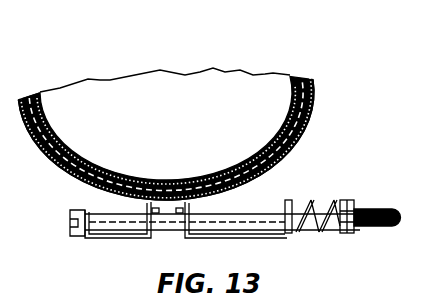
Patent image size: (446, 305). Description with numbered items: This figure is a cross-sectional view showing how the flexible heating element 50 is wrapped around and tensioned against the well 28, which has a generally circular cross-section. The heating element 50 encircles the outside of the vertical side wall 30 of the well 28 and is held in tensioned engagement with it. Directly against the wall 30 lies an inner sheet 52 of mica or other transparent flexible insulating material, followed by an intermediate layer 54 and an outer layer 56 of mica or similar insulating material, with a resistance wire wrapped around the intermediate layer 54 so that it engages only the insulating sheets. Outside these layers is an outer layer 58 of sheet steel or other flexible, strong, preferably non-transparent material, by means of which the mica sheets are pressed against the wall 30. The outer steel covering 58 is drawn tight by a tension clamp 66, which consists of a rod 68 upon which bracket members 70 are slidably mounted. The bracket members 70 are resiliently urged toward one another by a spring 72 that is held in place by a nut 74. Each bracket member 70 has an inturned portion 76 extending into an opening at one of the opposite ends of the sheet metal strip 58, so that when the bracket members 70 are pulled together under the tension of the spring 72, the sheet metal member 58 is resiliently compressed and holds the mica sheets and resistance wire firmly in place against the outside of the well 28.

The well 28 is at (235, 80).
The side wall 30 is at (276, 120).
The flexible heating element 50 is at (55, 170).
The inner sheet of insulating material 52 is at (301, 76).
The intermediate layer of insulating material 54 is at (306, 77).
The outer layer of insulating material 56 is at (309, 79).
The outer layer of sheet steel 58 is at (314, 98).
The tension clamp 66 is at (86, 241).
The rod 68 is at (222, 232).
The bracket members 70 is at (110, 238).
The spring 72 is at (308, 213).
The nut 74 is at (351, 201).
The inturned portions 76 is at (151, 207).